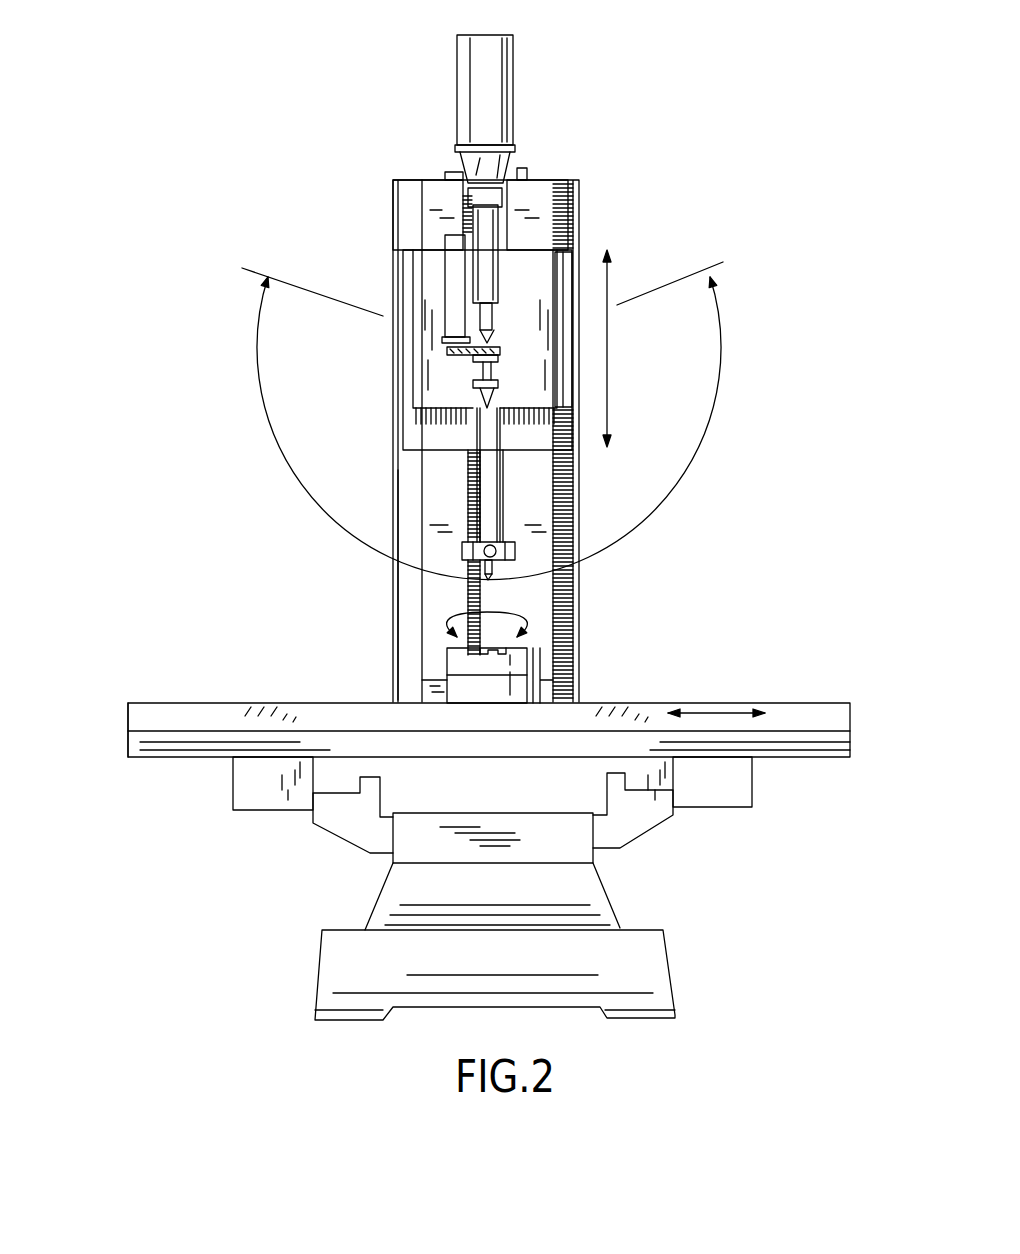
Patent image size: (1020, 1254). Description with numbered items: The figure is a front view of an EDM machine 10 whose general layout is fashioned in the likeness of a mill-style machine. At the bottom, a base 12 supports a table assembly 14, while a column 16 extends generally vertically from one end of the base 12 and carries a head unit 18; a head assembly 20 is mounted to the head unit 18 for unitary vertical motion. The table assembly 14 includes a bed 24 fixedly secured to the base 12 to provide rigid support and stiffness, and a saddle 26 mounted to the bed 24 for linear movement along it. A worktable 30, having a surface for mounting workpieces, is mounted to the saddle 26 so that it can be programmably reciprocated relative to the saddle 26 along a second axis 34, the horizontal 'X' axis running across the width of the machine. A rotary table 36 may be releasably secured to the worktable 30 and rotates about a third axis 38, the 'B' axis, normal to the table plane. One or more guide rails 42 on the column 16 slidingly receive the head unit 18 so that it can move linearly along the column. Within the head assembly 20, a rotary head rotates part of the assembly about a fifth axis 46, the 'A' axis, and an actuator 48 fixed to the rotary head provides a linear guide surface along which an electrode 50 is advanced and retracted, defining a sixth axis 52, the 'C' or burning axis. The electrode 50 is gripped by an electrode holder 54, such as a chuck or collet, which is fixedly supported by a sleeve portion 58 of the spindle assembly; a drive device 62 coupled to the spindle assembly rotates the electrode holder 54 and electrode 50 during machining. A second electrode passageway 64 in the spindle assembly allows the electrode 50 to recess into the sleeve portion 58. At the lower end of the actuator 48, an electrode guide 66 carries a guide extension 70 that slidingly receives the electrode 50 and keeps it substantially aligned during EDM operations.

The EDM machine 10 is at (385, 100).
The base 12 is at (320, 972).
The table assembly 14 is at (122, 731).
The column 16 is at (397, 468).
The head unit 18 is at (405, 258).
The head assembly 20 is at (602, 186).
The bed 24 is at (613, 888).
The saddle 26 is at (750, 777).
The worktable 30 is at (848, 713).
The second axis 34 is at (703, 712).
The rotary table 36 is at (468, 686).
The third axis 38 is at (537, 613).
The guide rails 42 is at (425, 200).
The fifth axis 46 is at (258, 330).
The actuator 48 is at (503, 498).
The electrode 50 is at (487, 480).
The sixth axis 52 is at (608, 340).
The electrode holder 54 is at (478, 392).
The sleeve portion 58 is at (470, 370).
The drive device 62 is at (440, 282).
The second electrode passageway 64 is at (497, 337).
The electrode guide 66 is at (520, 546).
The guide extension 70 is at (470, 572).